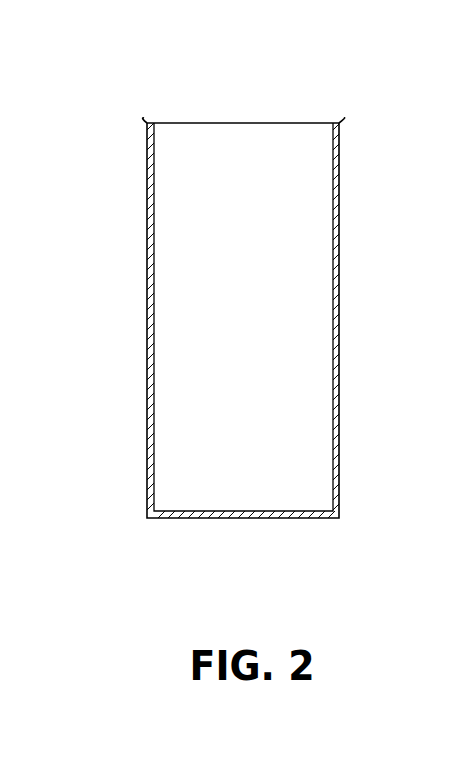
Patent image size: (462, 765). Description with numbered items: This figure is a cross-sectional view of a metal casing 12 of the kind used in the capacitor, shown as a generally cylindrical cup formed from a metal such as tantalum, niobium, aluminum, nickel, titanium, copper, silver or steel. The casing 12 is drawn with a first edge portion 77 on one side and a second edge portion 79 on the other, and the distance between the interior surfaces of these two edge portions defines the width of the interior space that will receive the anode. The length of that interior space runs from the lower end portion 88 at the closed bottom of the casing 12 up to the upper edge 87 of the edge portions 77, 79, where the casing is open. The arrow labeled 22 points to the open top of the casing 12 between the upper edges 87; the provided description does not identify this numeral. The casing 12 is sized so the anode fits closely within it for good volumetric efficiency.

The metal casing 12 is at (264, 299).
The open top 22 is at (247, 122).
The first edge portion 77 is at (147, 233).
The second edge portion 79 is at (340, 349).
The upper edge 87 is at (147, 123).
The lower end portion 88 is at (305, 518).